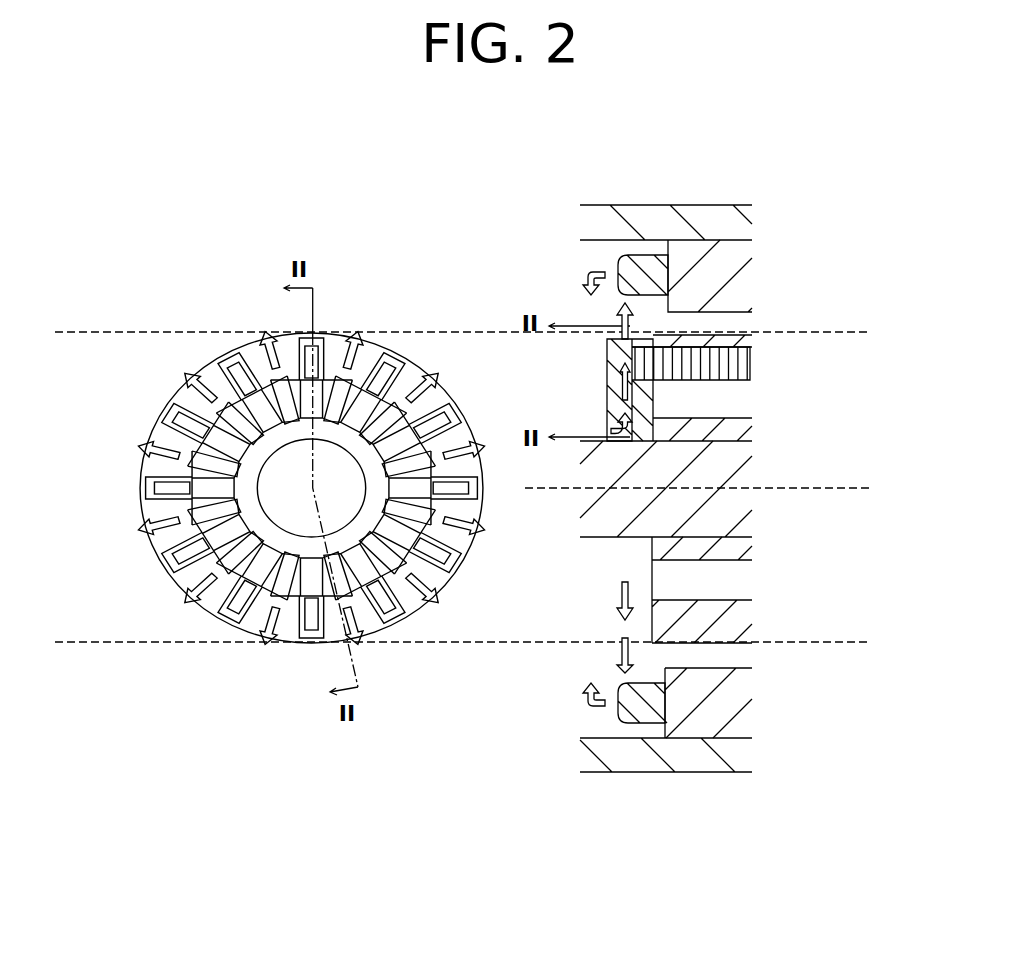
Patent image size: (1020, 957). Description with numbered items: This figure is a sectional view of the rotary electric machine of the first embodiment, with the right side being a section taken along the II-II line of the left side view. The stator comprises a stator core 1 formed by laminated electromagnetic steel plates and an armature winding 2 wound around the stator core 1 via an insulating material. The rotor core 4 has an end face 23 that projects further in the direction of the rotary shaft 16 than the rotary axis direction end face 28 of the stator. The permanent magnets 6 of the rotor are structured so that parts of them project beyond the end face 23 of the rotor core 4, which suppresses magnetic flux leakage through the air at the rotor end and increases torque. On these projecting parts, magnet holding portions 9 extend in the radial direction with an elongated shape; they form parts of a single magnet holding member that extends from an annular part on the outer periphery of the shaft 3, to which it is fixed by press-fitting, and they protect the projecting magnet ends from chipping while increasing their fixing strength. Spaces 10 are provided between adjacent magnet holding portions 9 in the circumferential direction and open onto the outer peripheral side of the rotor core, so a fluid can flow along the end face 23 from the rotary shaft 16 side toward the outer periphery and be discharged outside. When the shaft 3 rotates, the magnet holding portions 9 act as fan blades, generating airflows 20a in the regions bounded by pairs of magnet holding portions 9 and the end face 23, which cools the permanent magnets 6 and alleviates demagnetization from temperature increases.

The stator core 1 is at (736, 263).
The armature winding 2 is at (645, 260).
The shaft 3 is at (731, 463).
The rotor core 4 is at (720, 628).
The permanent magnets 6 is at (732, 362).
The magnet holding portions 9 is at (607, 380).
The spaces 10 is at (155, 468).
The rotary shaft 16 is at (697, 459).
The airflows 20a is at (618, 323).
The end face 23 is at (615, 713).
The rotary axis direction end face 28 is at (648, 628).